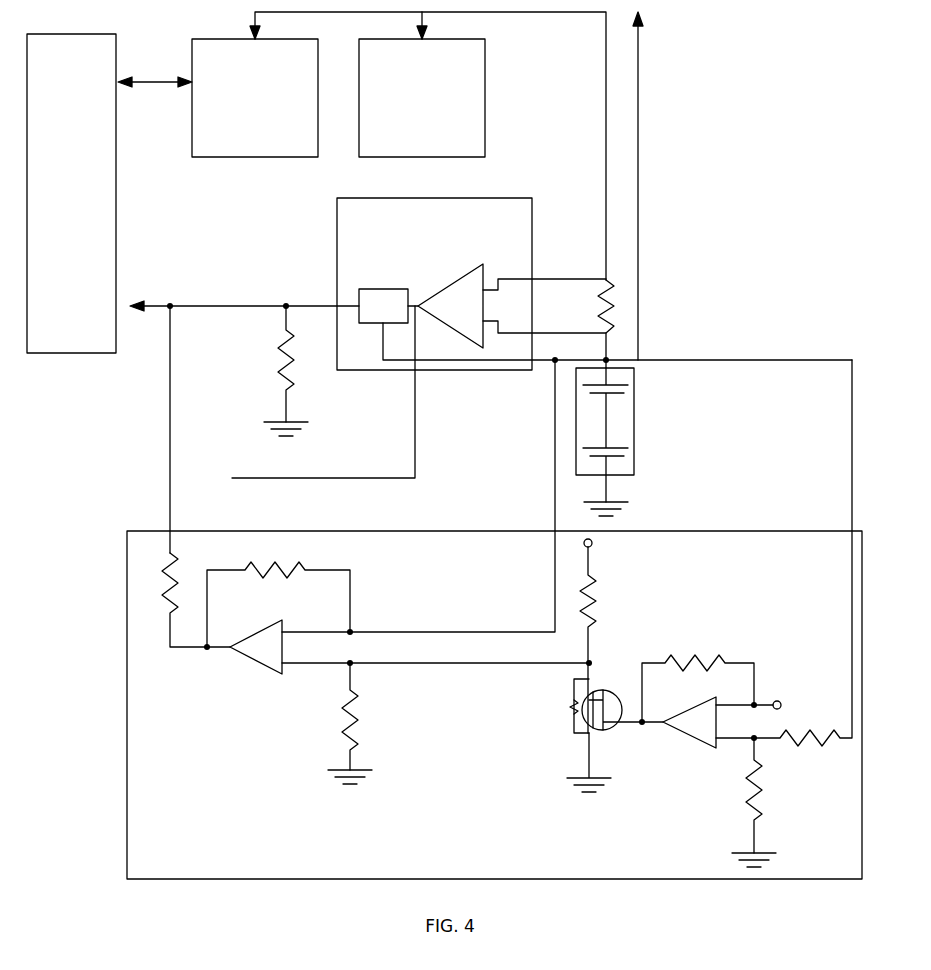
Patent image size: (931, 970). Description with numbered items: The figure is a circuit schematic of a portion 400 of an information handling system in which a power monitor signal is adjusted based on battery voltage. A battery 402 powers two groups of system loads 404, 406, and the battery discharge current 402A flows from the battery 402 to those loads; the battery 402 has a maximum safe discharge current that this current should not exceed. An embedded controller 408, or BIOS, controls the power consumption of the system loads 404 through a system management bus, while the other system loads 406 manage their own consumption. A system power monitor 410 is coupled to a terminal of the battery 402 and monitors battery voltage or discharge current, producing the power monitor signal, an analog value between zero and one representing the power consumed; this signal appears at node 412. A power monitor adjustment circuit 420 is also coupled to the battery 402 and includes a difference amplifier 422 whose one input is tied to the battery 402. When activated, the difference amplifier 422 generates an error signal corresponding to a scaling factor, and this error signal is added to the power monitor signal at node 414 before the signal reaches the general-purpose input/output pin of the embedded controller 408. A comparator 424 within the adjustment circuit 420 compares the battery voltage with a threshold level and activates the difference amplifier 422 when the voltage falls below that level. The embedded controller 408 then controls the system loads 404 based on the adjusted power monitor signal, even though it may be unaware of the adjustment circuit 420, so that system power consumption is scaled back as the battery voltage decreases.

The portion of an information handling system 400 is at (822, 80).
The battery 402 is at (636, 414).
The battery discharge current 402A is at (638, 87).
The system loads 404 is at (191, 134).
The system loads 406 is at (486, 135).
The embedded controller 408 is at (98, 354).
The system power monitor 410 is at (336, 250).
The node 412 is at (290, 310).
The node 414 is at (172, 310).
The power monitor adjustment circuit 420 is at (860, 818).
The difference amplifier 422 is at (250, 655).
The comparator 424 is at (690, 740).